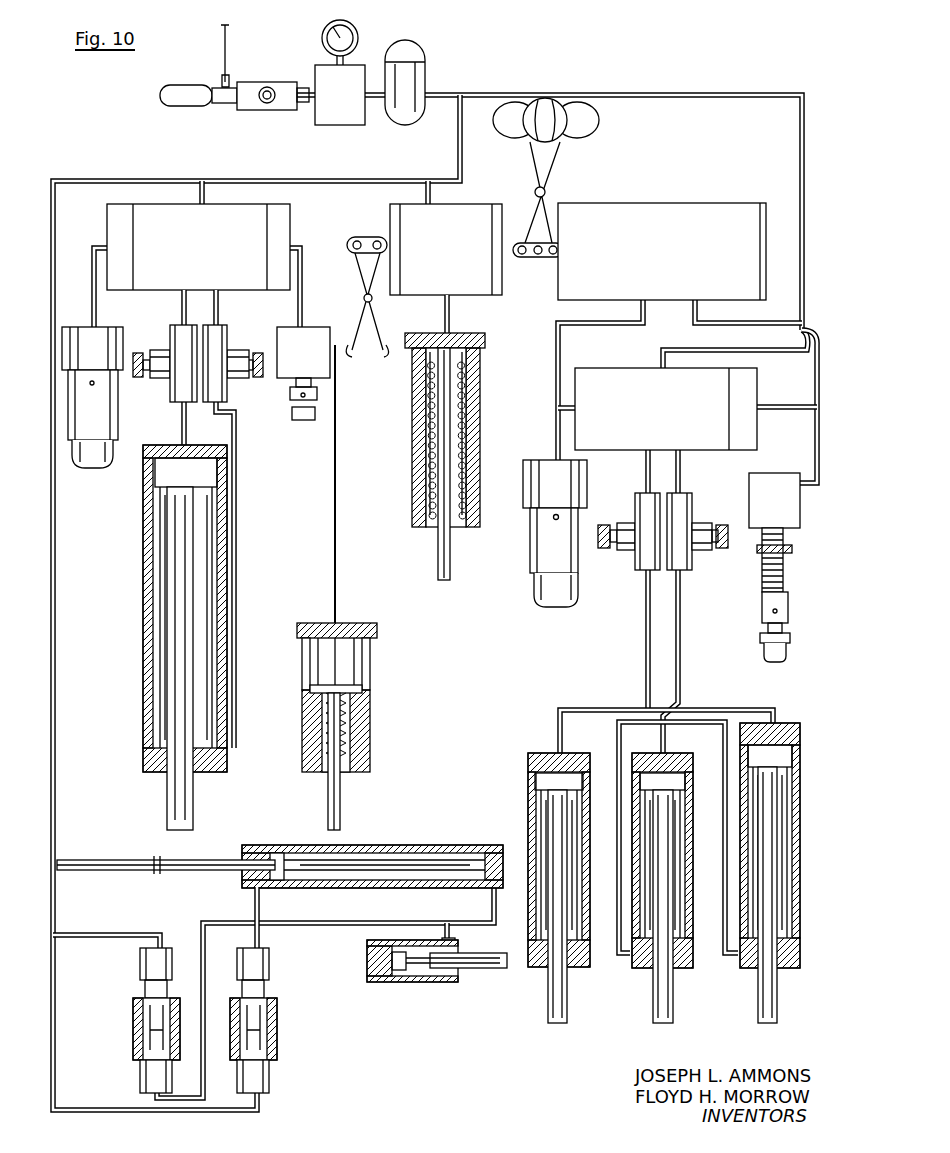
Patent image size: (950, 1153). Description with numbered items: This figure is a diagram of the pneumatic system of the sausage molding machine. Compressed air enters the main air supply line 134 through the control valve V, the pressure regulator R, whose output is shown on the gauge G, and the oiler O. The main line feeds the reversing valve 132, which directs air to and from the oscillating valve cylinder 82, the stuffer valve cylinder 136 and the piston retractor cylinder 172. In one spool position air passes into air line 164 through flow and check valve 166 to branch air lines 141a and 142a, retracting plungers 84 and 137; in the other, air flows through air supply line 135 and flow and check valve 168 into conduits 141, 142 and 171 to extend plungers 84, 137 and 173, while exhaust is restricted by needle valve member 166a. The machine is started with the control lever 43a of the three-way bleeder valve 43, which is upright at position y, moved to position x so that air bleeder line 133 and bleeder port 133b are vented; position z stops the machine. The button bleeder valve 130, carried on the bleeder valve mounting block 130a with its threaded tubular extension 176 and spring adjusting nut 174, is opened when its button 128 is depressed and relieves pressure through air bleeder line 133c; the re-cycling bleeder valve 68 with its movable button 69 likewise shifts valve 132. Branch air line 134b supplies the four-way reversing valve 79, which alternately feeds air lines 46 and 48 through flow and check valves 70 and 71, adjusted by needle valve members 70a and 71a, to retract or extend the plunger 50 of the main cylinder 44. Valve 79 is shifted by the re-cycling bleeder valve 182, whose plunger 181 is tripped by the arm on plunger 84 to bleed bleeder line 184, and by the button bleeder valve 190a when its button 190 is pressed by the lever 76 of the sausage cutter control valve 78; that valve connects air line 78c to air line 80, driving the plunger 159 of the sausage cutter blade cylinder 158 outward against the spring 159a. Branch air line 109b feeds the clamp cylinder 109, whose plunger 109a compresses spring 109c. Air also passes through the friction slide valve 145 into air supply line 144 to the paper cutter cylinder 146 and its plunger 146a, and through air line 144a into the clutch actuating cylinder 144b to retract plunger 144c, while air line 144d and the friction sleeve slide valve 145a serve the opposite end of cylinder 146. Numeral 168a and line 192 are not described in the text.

The main air supply line 134 is at (290, 185).
The branch air line 134b is at (204, 192).
The air line 78c is at (428, 200).
The bleeder line 184 is at (90, 255).
The conduit 192 is at (318, 242).
The air supply line 144 is at (330, 920).
The air line 144a is at (455, 940).
The clutch actuating cylinder 144b is at (435, 982).
The plunger 144c is at (470, 970).
The air line 144d is at (140, 1112).
The air bleeder line 133 is at (641, 316).
The bleeder port 133b is at (562, 410).
The air bleeder line 133c is at (782, 409).
The air supply line 135 is at (647, 470).
The air line 164 is at (683, 463).
The conduit 141 is at (665, 735).
The branch air line 141a is at (620, 723).
The conduit 142 is at (775, 713).
The branch air line 142a is at (698, 716).
The conduit 171 is at (559, 730).
The main air supply line control valve V is at (190, 85).
The pressure regulator R is at (360, 125).
The gauge G is at (358, 36).
The oiler O is at (415, 50).
The stop and start three-way bleeder valve 43 is at (673, 242).
The control lever 43a is at (540, 165).
The start position x is at (592, 118).
The upright position y is at (538, 98).
The stop position z is at (508, 112).
The four-way reversing valve 79 is at (202, 242).
The sausage cutter control valve 78 is at (458, 242).
The reversing valve 132 is at (683, 416).
The bleeder valve mounting block 130a is at (790, 498).
The re-cycling bleeder valve 182 is at (100, 410).
The plunger 181 is at (83, 470).
The button 190 is at (316, 420).
The button bleeder valve 190a is at (291, 395).
The air line 46 is at (200, 272).
The air line 48 is at (217, 305).
The flow and check valve 70 is at (176, 385).
The needle valve member 70a is at (138, 352).
The flow and check valve 71 is at (228, 384).
The needle valve member 71a is at (258, 352).
The main cylinder 44 is at (143, 618).
The plunger 50 is at (167, 796).
The clamp cylinder 109 is at (370, 660).
The plunger 109a is at (341, 808).
The branch air line 109b is at (334, 560).
The spring 109c is at (362, 695).
The lever 76 is at (356, 360).
The air line 80 is at (452, 314).
The sausage cutter blade cylinder 158 is at (478, 395).
The plunger 159 is at (438, 556).
The spring 159a is at (430, 440).
The re-cycling bleeder valve 68 is at (535, 562).
The movable button 69 is at (540, 606).
The flow and check valve 168 is at (640, 562).
The valve knob 168a is at (604, 523).
The flow and check valve 166 is at (688, 507).
The needle valve member 166a is at (718, 552).
The spring adjusting nut 174 is at (792, 549).
The threaded tubular extension 176 is at (784, 588).
The button bleeder valve 130 is at (788, 606).
The button 128 is at (785, 652).
The piston retractor cylinder 172 is at (528, 808).
The plunger 173 is at (568, 1020).
The oscillating valve cylinder 82 is at (695, 935).
The plunger 84 is at (655, 1020).
The stuffer valve cylinder 136 is at (800, 858).
The plunger 137 is at (777, 985).
The paper cutter cylinder 146 is at (398, 845).
The plunger 146a is at (100, 872).
The friction slide valve 145 is at (135, 1025).
The friction sleeve slide valve 145a is at (278, 1028).